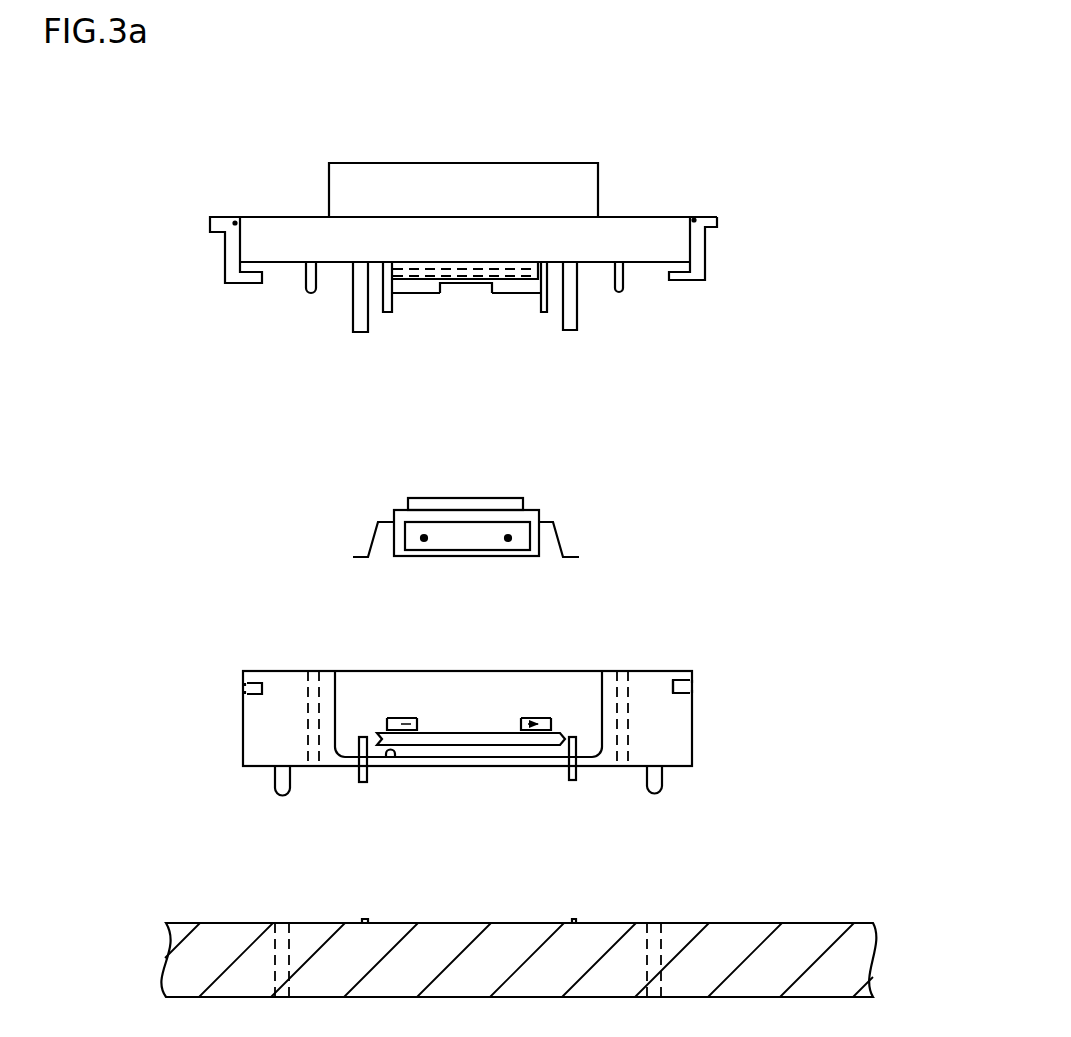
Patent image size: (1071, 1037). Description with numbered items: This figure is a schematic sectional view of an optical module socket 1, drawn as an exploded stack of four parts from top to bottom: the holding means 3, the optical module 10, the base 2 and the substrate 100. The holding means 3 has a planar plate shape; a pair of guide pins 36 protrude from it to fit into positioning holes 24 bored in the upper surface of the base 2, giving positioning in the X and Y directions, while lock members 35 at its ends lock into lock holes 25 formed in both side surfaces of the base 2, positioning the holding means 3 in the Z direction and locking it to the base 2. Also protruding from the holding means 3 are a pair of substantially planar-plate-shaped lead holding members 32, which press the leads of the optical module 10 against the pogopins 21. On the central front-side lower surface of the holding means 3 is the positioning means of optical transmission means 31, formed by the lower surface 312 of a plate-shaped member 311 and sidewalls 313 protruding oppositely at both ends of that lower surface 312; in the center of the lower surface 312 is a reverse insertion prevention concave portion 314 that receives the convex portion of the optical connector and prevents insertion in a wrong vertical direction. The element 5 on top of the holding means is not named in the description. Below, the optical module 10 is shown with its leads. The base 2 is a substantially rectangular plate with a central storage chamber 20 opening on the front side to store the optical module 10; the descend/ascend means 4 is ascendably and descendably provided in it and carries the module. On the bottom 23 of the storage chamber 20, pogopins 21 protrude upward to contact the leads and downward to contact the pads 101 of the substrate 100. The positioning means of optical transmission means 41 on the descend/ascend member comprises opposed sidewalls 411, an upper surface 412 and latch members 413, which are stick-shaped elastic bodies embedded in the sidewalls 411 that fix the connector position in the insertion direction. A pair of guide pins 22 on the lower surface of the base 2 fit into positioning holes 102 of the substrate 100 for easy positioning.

The optical module socket 1 is at (735, 156).
The holding means 3 is at (256, 211).
The mating connector body 5 is at (572, 168).
The lock members 35 is at (706, 273).
The guide pins 36 is at (619, 293).
The lead holding members 32 is at (354, 296).
The positioning means of optical transmission means 31 is at (386, 318).
The plate-shaped member 311 is at (548, 291).
The lower surface 312 is at (420, 294).
The sidewalls 313 is at (546, 292).
The reverse insertion prevention concave portion 314 is at (470, 284).
The optical module 10 is at (547, 510).
The base 2 is at (700, 744).
The storage chamber 20 is at (535, 687).
The lock holes 25 is at (696, 685).
The guide pins 22 is at (276, 778).
The pogopins 21 is at (359, 770).
The positioning holes 24 is at (615, 747).
The bottom 23 is at (392, 758).
The descend/ascend means 4 is at (477, 738).
The positioning means of optical transmission means 41 is at (256, 603).
The upper surface 412 is at (440, 732).
The sidewalls 411 is at (400, 719).
The latch members 413 is at (528, 729).
The substrate 100 is at (815, 933).
The pads 101 is at (575, 920).
The positioning holes 102 is at (660, 922).